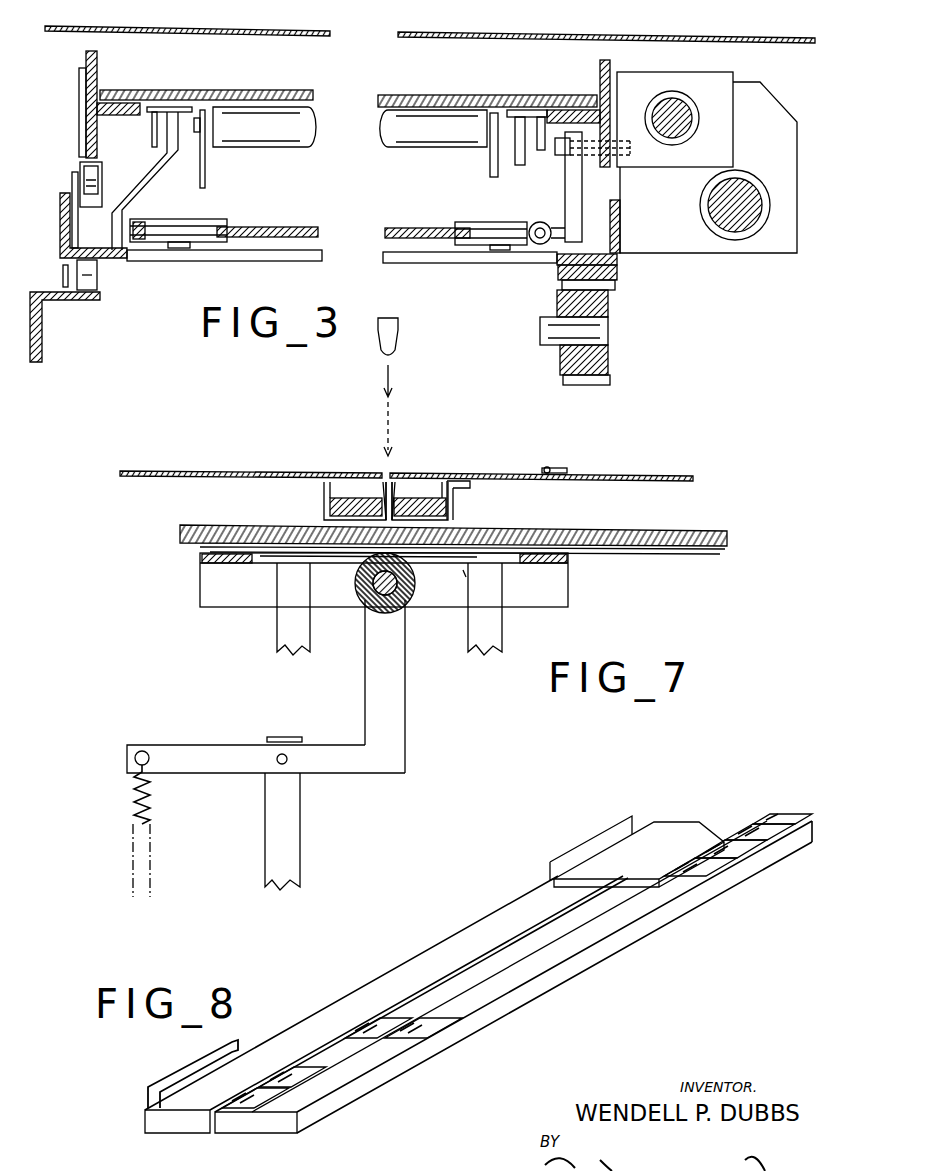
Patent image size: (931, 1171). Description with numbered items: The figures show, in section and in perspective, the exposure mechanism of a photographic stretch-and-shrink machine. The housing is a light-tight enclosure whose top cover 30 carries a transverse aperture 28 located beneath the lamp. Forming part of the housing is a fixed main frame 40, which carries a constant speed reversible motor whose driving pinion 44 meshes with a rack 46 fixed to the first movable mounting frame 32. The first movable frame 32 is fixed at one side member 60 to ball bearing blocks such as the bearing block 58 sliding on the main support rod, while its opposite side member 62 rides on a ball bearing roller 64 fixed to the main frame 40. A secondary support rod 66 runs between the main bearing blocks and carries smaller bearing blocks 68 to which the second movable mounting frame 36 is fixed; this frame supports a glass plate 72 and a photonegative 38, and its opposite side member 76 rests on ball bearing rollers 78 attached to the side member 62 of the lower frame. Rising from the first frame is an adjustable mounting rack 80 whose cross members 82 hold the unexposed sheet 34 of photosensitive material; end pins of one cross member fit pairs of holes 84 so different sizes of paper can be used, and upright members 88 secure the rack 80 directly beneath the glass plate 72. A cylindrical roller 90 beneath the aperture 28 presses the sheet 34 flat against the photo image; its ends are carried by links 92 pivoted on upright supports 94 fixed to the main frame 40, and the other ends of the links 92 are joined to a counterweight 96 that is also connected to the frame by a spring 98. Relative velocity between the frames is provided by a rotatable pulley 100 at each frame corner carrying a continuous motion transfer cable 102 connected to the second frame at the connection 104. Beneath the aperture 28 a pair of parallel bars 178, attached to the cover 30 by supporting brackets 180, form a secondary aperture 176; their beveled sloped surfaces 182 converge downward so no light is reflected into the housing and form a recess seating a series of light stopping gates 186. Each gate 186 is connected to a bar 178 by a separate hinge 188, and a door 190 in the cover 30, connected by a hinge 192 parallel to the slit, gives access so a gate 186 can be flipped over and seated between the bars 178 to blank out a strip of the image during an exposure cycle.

In FIG. 7, the aperture 28 is at (395, 468).
In FIG. 3, the top cover 30 is at (465, 33).
In FIG. 7, the top cover 30 is at (660, 475).
In FIG. 3, the first movable mounting frame 32 is at (243, 262).
In FIG. 7, the unexposed sheet of photosensitive material 34 is at (263, 547).
In FIG. 3, the second movable mounting frame 36 is at (85, 100).
In FIG. 7, the photonegative 38 is at (630, 557).
In FIG. 3, the fixed main frame 40 is at (42, 345).
In FIG. 3, the driving pinion 44 is at (608, 360).
In FIG. 3, the rack 46 is at (618, 281).
In FIG. 3, the bearing block 58 is at (780, 144).
In FIG. 3, the side member 60 is at (620, 262).
In FIG. 3, the opposite side member 62 is at (113, 260).
In FIG. 3, the ball bearing roller 64 is at (100, 278).
In FIG. 3, the secondary support rod 66 is at (675, 107).
In FIG. 3, the smaller bearing block 68 is at (725, 85).
In FIG. 3, the glass plate 72 is at (289, 89).
In FIG. 7, the glass plate 72 is at (180, 528).
In FIG. 3, the opposite side member of the secondary frame 76 is at (97, 135).
In FIG. 3, the ball bearing rollers 78 is at (78, 163).
In FIG. 3, the adjustable mounting rack 80 is at (543, 107).
In FIG. 7, the adjustable mounting rack 80 is at (176, 593).
In FIG. 7, the cross members 82 is at (227, 565).
In FIG. 7, the holes 84 is at (452, 582).
In FIG. 3, the upright members 88 is at (169, 168).
In FIG. 7, the upright members 88 is at (300, 657).
In FIG. 3, the cylindrical roller 90 is at (267, 148).
In FIG. 7, the cylindrical roller 90 is at (410, 610).
In FIG. 3, the links 92 is at (207, 181).
In FIG. 7, the links 92 is at (402, 705).
In FIG. 7, the upright supports 94 is at (302, 832).
In FIG. 7, the counterweight 96 is at (167, 742).
In FIG. 7, the spring 98 is at (150, 812).
In FIG. 3, the rotatable pulley 100 is at (213, 223).
In FIG. 3, the motion transfer cable 102 is at (302, 223).
In FIG. 3, the cable connection 104 is at (570, 200).
In FIG. 7, the secondary aperture 176 is at (378, 510).
In FIG. 7, the parallel bars 178 is at (345, 510).
In FIG. 8, the parallel bars 178 is at (325, 1107).
In FIG. 7, the supporting brackets 180 is at (460, 487).
In FIG. 7, the sloped surfaces 182 is at (360, 497).
In FIG. 8, the light stopping gates 186 is at (402, 1057).
In FIG. 8, the hinges 188 is at (265, 1103).
In FIG. 7, the door 190 is at (498, 473).
In FIG. 7, the hinge 192 is at (546, 468).